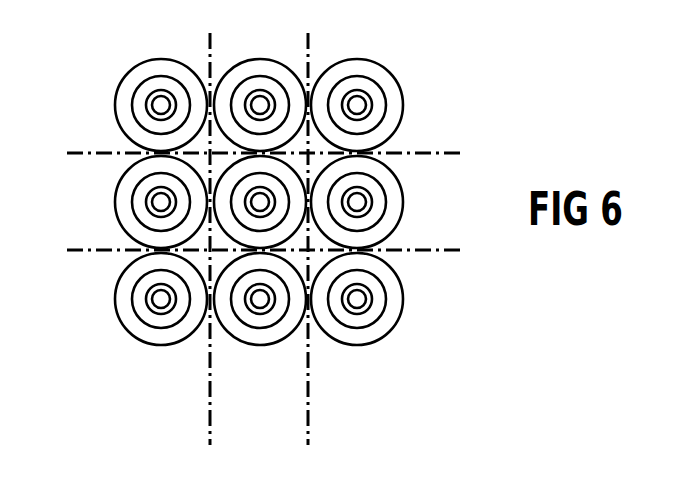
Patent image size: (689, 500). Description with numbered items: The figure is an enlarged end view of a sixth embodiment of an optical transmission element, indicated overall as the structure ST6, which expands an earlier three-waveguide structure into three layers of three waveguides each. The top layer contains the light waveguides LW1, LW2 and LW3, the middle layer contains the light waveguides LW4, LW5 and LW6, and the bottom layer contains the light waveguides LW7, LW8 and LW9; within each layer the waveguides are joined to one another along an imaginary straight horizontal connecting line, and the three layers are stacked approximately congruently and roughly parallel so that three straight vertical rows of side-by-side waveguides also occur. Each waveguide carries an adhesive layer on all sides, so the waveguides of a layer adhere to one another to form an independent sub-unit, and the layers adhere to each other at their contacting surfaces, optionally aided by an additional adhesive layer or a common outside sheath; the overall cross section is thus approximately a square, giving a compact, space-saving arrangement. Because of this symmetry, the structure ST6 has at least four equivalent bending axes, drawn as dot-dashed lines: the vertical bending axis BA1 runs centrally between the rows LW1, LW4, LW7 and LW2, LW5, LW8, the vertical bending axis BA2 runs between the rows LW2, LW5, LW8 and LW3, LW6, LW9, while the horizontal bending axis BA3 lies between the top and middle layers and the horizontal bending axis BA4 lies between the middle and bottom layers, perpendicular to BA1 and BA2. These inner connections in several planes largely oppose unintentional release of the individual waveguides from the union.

The light waveguide LW1 is at (158, 78).
The light waveguide LW2 is at (257, 78).
The light waveguide LW3 is at (355, 78).
The light waveguide LW4 is at (132, 202).
The light waveguide LW5 is at (300, 190).
The light waveguide LW6 is at (386, 204).
The light waveguide LW7 is at (156, 328).
The light waveguide LW8 is at (255, 328).
The light waveguide LW9 is at (353, 328).
The bending axis BA1 is at (210, 430).
The bending axis BA2 is at (308, 430).
The bending axis BA3 is at (445, 153).
The bending axis BA4 is at (450, 253).
The structure ST6 is at (432, 358).